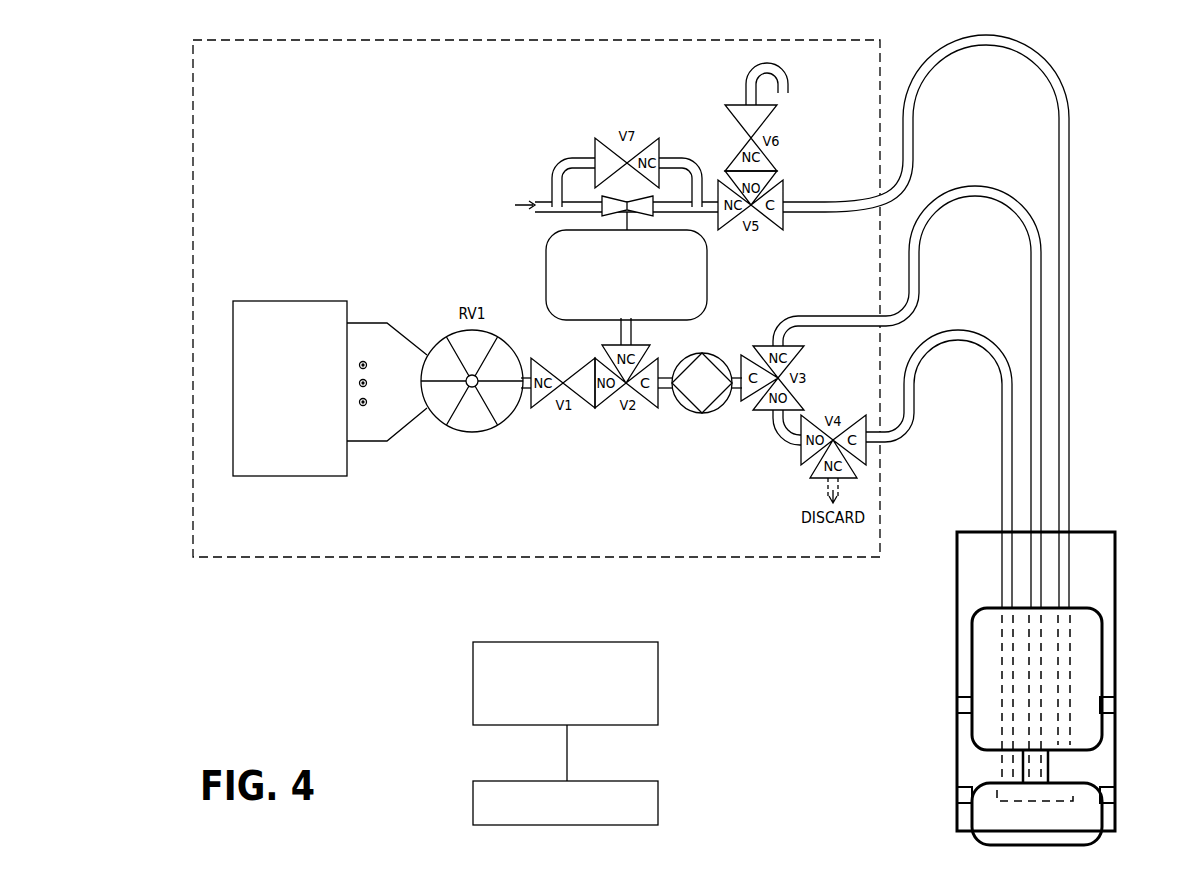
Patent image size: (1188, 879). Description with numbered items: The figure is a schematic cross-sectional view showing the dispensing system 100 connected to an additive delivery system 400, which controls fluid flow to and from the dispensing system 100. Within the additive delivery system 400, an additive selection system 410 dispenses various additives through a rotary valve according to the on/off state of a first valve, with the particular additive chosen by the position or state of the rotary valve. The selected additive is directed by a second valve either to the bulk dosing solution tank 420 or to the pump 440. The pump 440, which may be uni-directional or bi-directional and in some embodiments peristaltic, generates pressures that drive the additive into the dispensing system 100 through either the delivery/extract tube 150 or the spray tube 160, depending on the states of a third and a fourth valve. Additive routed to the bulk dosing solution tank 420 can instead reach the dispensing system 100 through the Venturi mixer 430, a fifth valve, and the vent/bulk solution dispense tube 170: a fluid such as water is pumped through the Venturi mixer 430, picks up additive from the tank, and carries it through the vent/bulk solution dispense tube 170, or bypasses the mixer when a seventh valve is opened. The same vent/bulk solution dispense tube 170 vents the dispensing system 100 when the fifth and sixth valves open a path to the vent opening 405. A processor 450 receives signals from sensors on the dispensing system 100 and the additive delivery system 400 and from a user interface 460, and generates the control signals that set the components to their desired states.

The dispensing system 100 is at (1092, 488).
The delivery/extract tube 150 is at (995, 362).
The spray tube 160 is at (1017, 219).
The vent/bulk solution dispense tube 170 is at (1026, 60).
The additive delivery system 400 is at (513, 557).
The vent opening 405 is at (814, 95).
The additive selection system 410 is at (312, 298).
The bulk dosing solution tank 420 is at (546, 268).
The Venturi mixer 430 is at (602, 215).
The pump 440 is at (693, 410).
The processor 450 is at (658, 673).
The user interface 460 is at (658, 787).